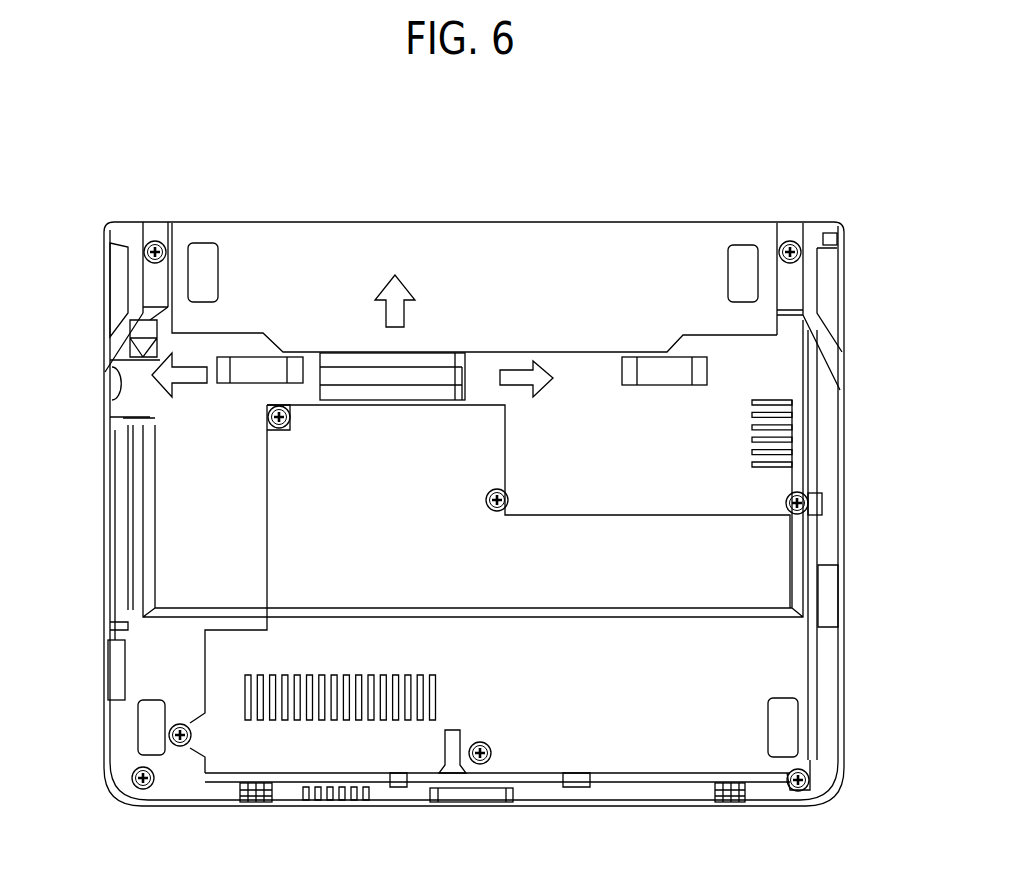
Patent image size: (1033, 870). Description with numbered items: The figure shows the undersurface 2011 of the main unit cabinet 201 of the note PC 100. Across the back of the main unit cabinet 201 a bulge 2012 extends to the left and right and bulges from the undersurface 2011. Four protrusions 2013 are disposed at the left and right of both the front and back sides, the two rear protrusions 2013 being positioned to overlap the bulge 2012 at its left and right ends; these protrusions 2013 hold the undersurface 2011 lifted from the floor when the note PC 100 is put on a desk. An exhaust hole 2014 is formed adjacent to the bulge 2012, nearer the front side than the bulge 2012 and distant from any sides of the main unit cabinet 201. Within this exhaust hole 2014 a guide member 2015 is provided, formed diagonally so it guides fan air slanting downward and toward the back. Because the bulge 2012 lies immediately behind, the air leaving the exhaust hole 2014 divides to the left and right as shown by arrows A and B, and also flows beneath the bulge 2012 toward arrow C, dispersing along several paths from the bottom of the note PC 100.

The note PC 100 is at (791, 110).
The main unit cabinet 201 is at (844, 462).
The undersurface 2011 is at (709, 428).
The bulge 2012 is at (690, 237).
The protrusions 2013 is at (204, 252).
The exhaust hole 2014 is at (420, 379).
The guide member 2015 is at (450, 375).